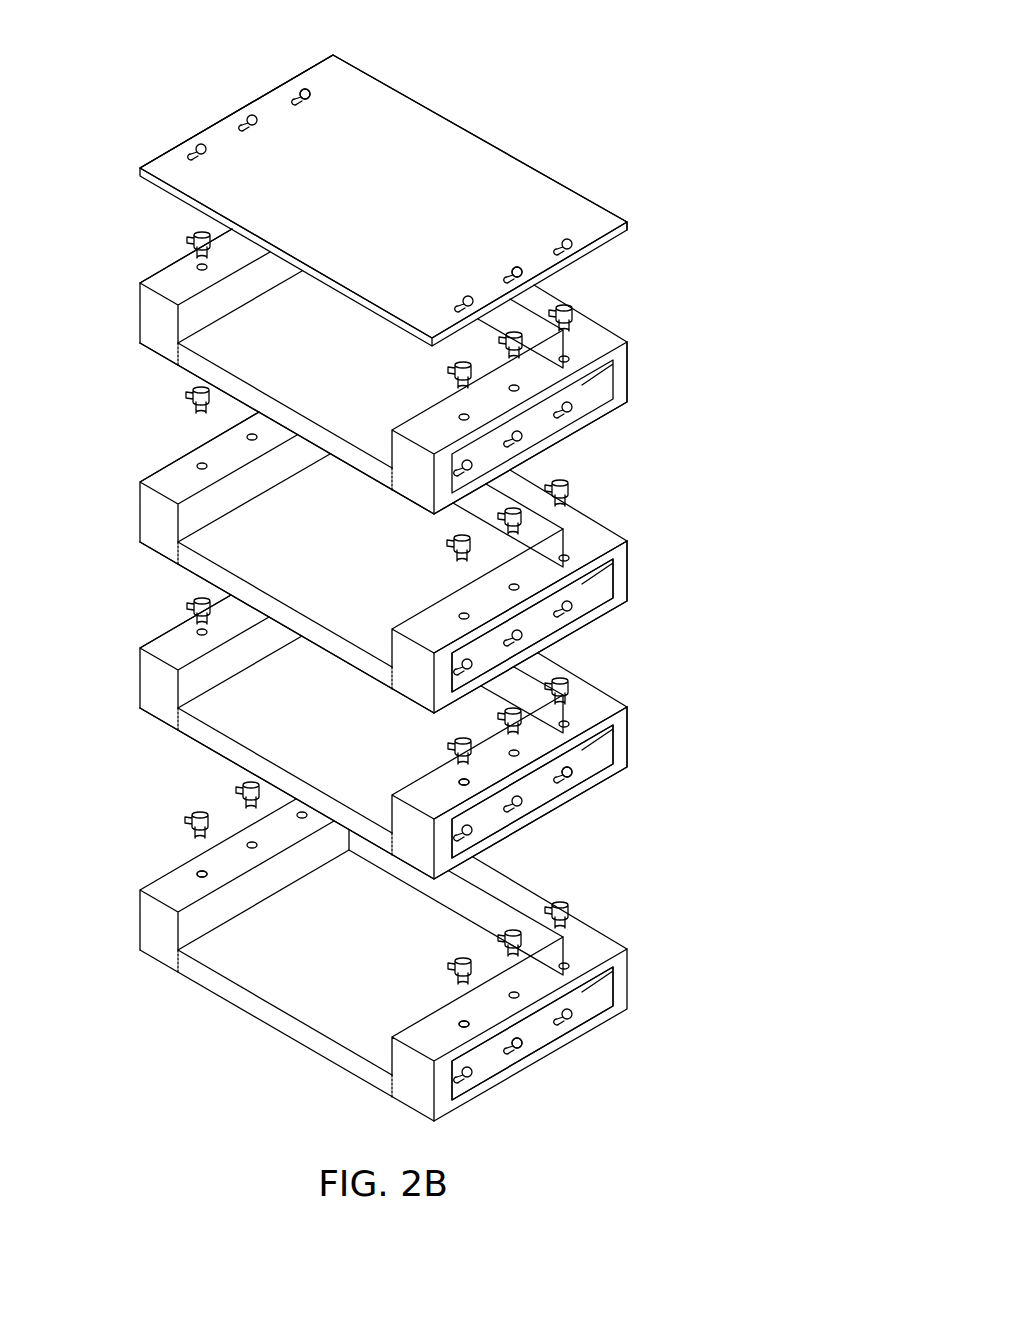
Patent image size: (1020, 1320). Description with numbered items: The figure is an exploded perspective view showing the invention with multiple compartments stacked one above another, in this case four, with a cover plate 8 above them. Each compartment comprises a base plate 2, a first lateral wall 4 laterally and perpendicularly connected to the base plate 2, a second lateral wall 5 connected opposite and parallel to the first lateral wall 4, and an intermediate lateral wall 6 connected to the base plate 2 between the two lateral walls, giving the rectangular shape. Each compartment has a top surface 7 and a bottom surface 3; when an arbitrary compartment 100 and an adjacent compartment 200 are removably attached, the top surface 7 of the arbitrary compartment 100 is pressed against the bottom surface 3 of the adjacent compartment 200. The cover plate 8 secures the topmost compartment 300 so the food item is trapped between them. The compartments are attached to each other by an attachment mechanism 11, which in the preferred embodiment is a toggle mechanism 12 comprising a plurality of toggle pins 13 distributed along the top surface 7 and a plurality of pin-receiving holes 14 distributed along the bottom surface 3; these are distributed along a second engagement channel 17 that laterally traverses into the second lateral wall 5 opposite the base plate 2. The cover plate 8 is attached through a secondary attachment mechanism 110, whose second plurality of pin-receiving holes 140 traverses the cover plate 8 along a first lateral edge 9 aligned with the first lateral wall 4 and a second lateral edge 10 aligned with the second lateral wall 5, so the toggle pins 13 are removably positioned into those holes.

The base plate 2 is at (331, 369).
The bottom surface 3 is at (606, 606).
The first lateral wall 4 is at (150, 337).
The second lateral wall 5 is at (403, 482).
The intermediate lateral wall 6 is at (525, 345).
The top surface 7 is at (603, 540).
The cover plate 8 is at (356, 215).
The first lateral edge 9 is at (235, 110).
The second lateral edge 10 is at (627, 222).
The attachment mechanism 11 is at (455, 777).
The toggle mechanism 12 is at (190, 383).
The toggle pins 13 is at (197, 228).
The pin-receiving holes 14 is at (565, 780).
The second engagement channel 17 is at (600, 997).
The arbitrary compartment 100 is at (698, 748).
The secondary attachment mechanism 110 is at (424, 193).
The second plurality of pin-receiving holes 140 is at (300, 94).
The adjacent compartment 200 is at (714, 578).
The topmost compartment 300 is at (640, 394).